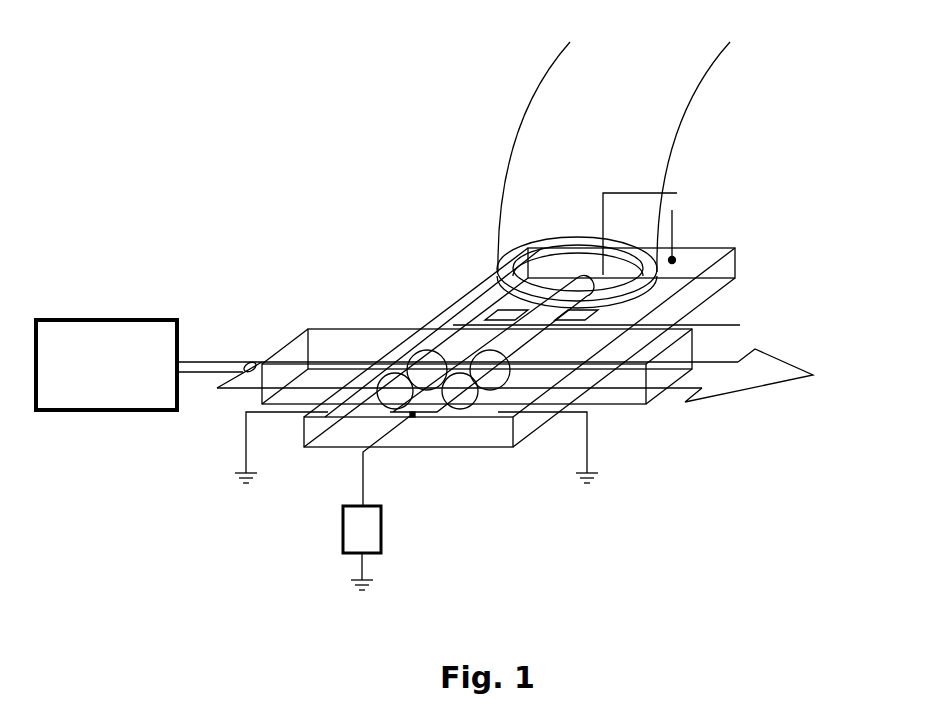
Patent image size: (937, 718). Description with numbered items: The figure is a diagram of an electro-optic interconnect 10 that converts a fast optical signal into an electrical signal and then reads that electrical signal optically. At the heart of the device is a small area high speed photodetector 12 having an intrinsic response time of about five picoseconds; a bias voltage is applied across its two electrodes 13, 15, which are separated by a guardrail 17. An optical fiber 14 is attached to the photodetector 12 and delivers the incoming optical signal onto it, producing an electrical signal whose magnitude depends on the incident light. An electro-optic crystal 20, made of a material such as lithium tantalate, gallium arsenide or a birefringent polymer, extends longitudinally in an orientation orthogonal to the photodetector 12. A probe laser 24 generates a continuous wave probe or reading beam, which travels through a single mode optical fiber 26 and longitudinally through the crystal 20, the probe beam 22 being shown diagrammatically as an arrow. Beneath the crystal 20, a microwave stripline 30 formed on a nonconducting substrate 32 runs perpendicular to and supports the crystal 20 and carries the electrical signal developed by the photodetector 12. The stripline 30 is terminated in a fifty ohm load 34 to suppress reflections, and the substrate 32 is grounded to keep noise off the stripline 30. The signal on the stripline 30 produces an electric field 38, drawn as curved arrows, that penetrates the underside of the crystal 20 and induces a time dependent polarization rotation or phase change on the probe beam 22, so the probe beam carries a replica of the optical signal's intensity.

The electro-optic interconnect 10 is at (212, 177).
The photodetector 12 is at (693, 280).
The electrode 13 is at (563, 268).
The optical fiber 14 is at (523, 128).
The electrode 15 is at (676, 259).
The guardrail 17 is at (657, 300).
The electro-optic crystal 20 is at (320, 338).
The optical probe beam 22 is at (682, 392).
The probe laser 24 is at (122, 412).
The single mode optical fiber 26 is at (213, 362).
The microwave stripline 30 is at (430, 410).
The nonconducting substrate 32 is at (493, 438).
The 50 ohm load 34 is at (342, 528).
The electric field 38 is at (425, 352).